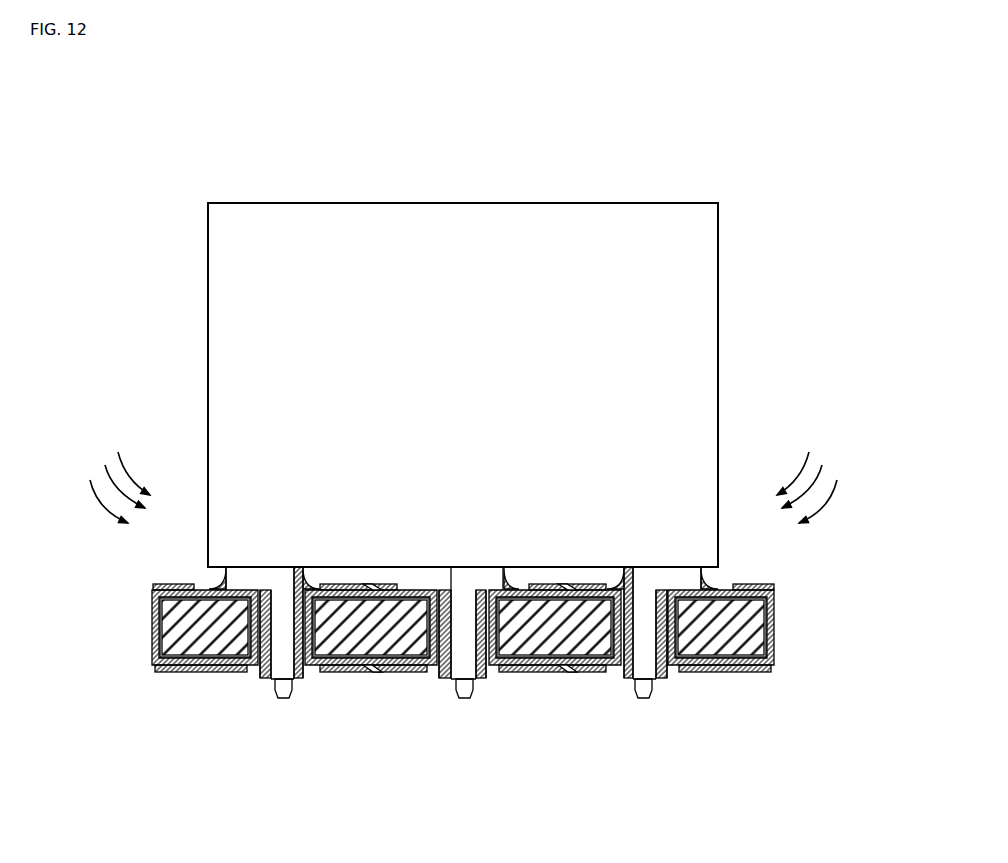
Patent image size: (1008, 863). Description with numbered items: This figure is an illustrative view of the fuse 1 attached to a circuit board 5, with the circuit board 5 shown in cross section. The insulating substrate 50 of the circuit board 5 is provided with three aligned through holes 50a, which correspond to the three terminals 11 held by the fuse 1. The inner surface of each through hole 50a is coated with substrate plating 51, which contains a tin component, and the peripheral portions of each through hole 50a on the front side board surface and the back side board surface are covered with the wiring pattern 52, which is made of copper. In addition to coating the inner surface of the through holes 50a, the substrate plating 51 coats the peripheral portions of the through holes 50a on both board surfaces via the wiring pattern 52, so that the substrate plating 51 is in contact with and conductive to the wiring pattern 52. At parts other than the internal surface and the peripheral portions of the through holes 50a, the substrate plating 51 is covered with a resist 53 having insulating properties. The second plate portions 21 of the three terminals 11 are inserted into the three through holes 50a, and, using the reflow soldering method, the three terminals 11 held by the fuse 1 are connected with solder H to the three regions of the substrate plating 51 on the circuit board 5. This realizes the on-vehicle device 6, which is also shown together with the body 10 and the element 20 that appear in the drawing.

The fuse 1 is at (510, 173).
The circuit board 5 is at (733, 688).
The on-vehicle device 6 is at (652, 122).
The component body 10 is at (720, 278).
The terminal 11 is at (282, 712).
The lead pin 20 is at (683, 577).
The second plate portion 21 is at (673, 722).
The insulating substrate 50 is at (165, 628).
The through hole 50a is at (280, 600).
The substrate plating 51 is at (155, 592).
The wiring pattern 52 is at (158, 597).
The resist 53 is at (155, 586).
The solder H is at (212, 582).